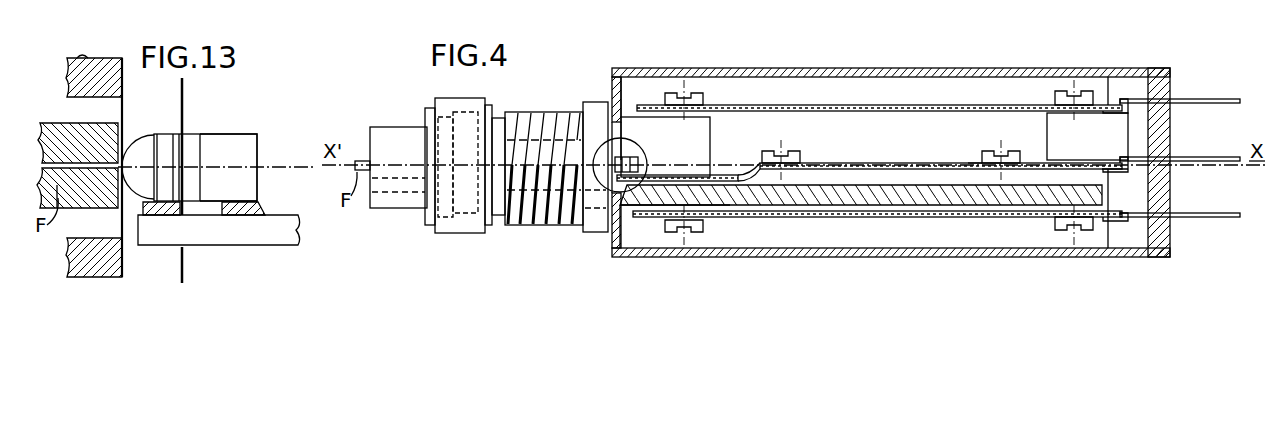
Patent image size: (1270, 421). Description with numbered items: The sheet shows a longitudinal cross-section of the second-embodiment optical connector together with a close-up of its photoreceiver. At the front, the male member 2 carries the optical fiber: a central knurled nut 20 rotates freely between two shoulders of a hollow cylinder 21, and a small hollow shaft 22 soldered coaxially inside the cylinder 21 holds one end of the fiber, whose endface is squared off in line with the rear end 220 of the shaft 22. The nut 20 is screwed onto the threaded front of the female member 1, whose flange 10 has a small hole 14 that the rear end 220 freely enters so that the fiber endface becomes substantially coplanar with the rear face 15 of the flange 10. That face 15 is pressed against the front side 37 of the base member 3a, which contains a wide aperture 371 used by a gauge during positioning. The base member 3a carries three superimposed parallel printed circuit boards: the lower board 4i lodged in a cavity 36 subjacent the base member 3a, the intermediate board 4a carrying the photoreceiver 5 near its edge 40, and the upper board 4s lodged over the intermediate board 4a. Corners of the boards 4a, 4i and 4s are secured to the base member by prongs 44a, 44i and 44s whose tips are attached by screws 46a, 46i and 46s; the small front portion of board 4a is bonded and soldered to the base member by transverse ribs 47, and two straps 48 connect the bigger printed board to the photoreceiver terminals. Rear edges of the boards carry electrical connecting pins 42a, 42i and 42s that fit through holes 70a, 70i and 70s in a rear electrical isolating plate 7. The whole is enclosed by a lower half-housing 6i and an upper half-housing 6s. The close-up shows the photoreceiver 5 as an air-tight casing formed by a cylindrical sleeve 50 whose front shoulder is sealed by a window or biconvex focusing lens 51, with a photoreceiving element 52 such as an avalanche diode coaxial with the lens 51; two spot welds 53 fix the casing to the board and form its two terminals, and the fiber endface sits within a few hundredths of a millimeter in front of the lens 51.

In FIG. 4, the female member 1 is at (537, 228).
In FIG. 4, the male member 2 is at (443, 240).
In FIG. 13, the photoreceiver 5 is at (290, 100).
In FIG. 4, the electrical isolating plate 7 is at (1170, 76).
In FIG. 13, the flange 10 is at (88, 58).
In FIG. 4, the flange 10 is at (590, 103).
In FIG. 13, the small hole 14 is at (60, 122).
In FIG. 13, the rear face 15 is at (122, 80).
In FIG. 4, the rear face 15 is at (613, 100).
In FIG. 4, the central knurled nut 20 is at (451, 98).
In FIG. 4, the hollow cylinder 21 is at (396, 132).
In FIG. 4, the small hollow shaft 22 is at (360, 160).
In FIG. 4, the cavity 36 is at (625, 255).
In FIG. 4, the front side 37 is at (621, 120).
In FIG. 13, the edge 40 is at (140, 238).
In FIG. 4, the ribs 47 is at (614, 243).
In FIG. 4, the straps 48 is at (770, 152).
In FIG. 13, the sleeve 50 is at (190, 135).
In FIG. 13, the lens 51 is at (147, 142).
In FIG. 13, the photoreceiving element 52 is at (232, 136).
In FIG. 13, the spot welds 53 is at (262, 210).
In FIG. 13, the rear end 220 is at (64, 237).
In FIG. 4, the wide aperture 371 is at (627, 118).
In FIG. 4, the base member 3a is at (868, 206).
In FIG. 13, the intermediate board 4a is at (299, 235).
In FIG. 4, the intermediate board 4a is at (735, 175).
In FIG. 4, the upper board 4s is at (834, 108).
In FIG. 4, the lower board 4i is at (772, 218).
In FIG. 4, the upper half-housing 6s is at (940, 70).
In FIG. 4, the lower half-housing 6i is at (898, 254).
In FIG. 4, the electrical connecting pins 42s is at (1123, 99).
In FIG. 4, the electrical connecting pins 42a is at (1123, 158).
In FIG. 4, the electrical connecting pins 42i is at (1123, 213).
In FIG. 4, the prongs 44s is at (703, 98).
In FIG. 4, the prongs 44a is at (970, 162).
In FIG. 4, the prongs 44i is at (700, 233).
In FIG. 4, the screws 46s is at (1063, 91).
In FIG. 4, the screws 46a is at (990, 151).
In FIG. 4, the screws 46i is at (1058, 231).
In FIG. 4, the holes 70s is at (1173, 99).
In FIG. 4, the holes 70a is at (1173, 157).
In FIG. 4, the holes 70i is at (1173, 213).